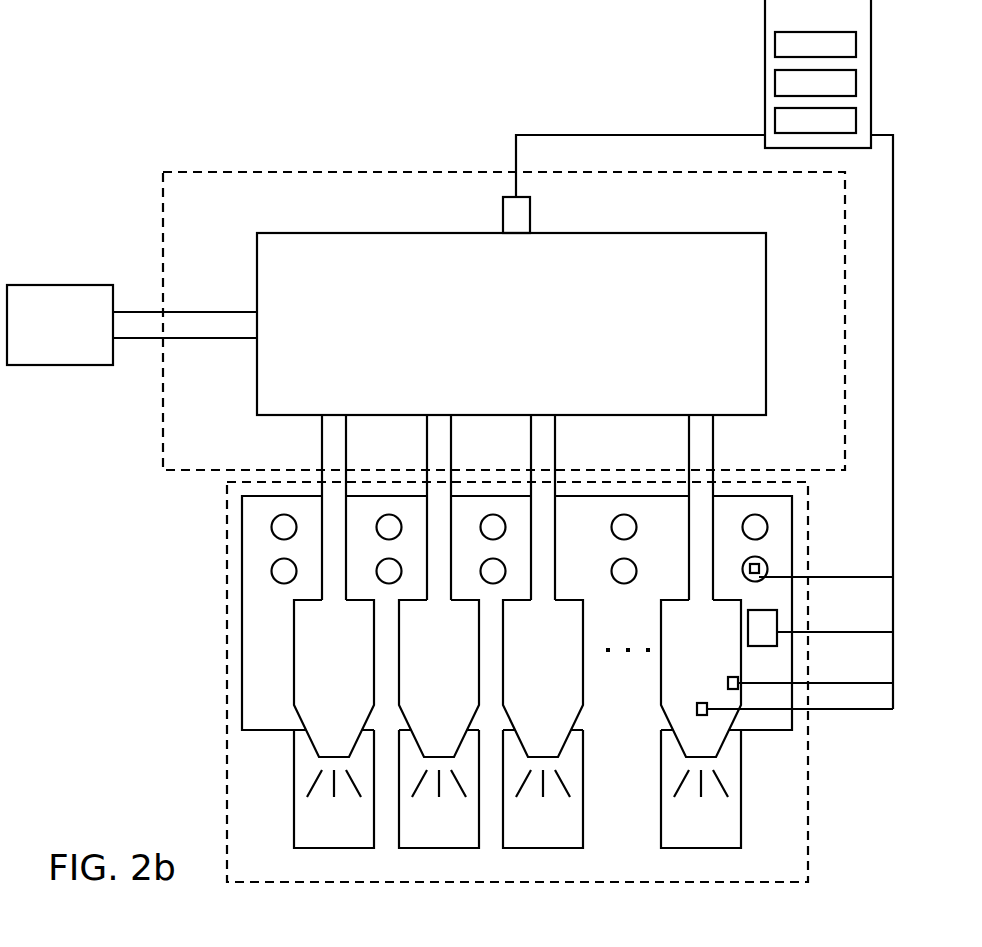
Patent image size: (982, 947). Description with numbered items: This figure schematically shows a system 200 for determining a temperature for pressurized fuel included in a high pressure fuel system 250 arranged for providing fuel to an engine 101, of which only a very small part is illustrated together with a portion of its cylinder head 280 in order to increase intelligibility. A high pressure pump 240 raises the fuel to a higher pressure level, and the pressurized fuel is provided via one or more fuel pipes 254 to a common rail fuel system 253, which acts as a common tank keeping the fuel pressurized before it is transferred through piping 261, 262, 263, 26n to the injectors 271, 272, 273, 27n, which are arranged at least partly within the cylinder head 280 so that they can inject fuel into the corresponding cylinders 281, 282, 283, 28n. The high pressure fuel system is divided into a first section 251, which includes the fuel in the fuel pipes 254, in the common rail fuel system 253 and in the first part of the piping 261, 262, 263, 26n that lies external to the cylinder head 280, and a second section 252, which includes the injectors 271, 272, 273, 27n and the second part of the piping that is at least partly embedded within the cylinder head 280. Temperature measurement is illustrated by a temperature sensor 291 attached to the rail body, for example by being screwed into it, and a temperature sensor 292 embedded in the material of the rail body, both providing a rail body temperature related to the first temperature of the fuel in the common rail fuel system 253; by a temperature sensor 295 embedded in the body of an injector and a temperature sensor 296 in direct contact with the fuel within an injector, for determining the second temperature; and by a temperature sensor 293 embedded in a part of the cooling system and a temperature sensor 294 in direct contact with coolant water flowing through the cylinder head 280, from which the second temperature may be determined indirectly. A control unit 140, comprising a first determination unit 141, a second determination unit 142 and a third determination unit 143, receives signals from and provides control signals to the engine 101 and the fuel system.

The engine 101 is at (190, 660).
The control unit 140 is at (818, 74).
The first determination unit 141 is at (815, 121).
The second determination unit 142 is at (815, 83).
The third determination unit 143 is at (815, 45).
The system 200 is at (715, 69).
The high pressure pump 240 is at (60, 325).
The high pressure fuel system 250 is at (113, 462).
The first section 251 is at (504, 321).
The second section 252 is at (517, 682).
The common rail fuel system 253 is at (511, 324).
The fuel pipes 254 is at (190, 318).
The piping 261 is at (340, 453).
The piping 262 is at (445, 453).
The piping 263 is at (535, 453).
The piping 26n is at (695, 453).
The injector 271 is at (334, 678).
The injector 272 is at (439, 678).
The injector 273 is at (543, 678).
The injector 27n is at (701, 678).
The cylinder head 280 is at (517, 613).
The cylinder 281 is at (822, 502).
The cylinder 282 is at (822, 540).
The cylinder 283 is at (543, 789).
The cylinder 28n is at (701, 789).
The temperature sensor 291 is at (584, 214).
The temperature sensor 292 is at (516, 219).
The temperature sensor 293 is at (763, 645).
The temperature sensor 294 is at (760, 580).
The temperature sensor 295 is at (738, 686).
The temperature sensor 296 is at (707, 715).